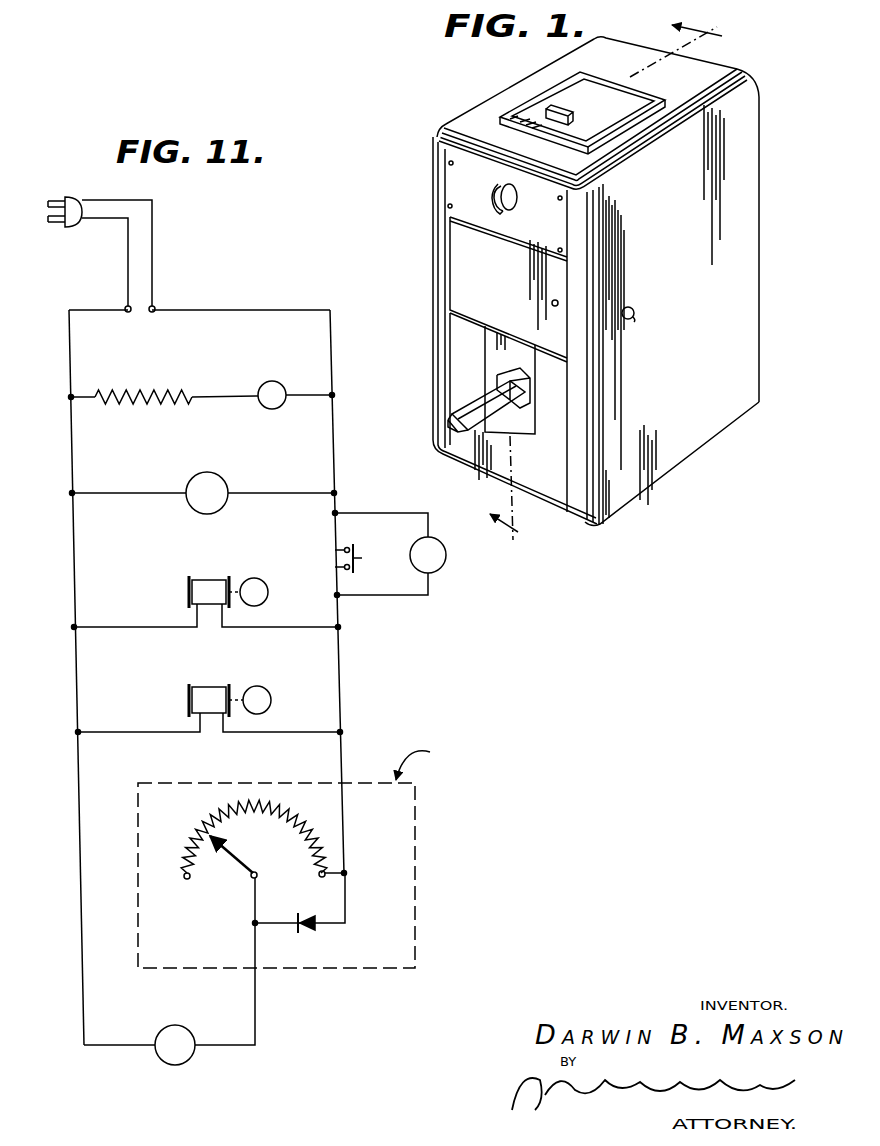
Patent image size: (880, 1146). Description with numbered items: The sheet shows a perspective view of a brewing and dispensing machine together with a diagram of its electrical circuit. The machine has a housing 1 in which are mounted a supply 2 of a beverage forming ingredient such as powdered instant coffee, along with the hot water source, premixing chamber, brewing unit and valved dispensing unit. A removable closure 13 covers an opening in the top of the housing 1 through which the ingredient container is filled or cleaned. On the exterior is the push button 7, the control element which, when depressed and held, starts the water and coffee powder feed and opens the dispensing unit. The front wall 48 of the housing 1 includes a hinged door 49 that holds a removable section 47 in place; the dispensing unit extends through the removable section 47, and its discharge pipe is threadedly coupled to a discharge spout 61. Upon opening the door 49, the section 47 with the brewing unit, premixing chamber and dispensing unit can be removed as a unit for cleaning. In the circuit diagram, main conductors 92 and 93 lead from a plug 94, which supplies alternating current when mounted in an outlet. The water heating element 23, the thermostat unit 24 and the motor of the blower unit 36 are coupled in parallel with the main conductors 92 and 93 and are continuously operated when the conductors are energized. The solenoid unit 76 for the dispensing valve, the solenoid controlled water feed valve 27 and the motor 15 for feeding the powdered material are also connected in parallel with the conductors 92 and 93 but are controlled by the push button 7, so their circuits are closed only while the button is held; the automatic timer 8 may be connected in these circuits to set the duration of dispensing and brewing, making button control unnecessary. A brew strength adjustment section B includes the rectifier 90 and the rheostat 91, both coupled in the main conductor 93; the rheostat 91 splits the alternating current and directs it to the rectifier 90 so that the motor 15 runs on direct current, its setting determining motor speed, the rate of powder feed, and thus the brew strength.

In FIG. 1, the housing 1 is at (764, 186).
In FIG. 1, the supply of beverage forming ingredient 2 is at (614, 283).
In FIG. 1, the push button 7 is at (640, 310).
In FIG. 11, the push button 7 is at (358, 546).
In FIG. 1, the automatic timer 8 is at (492, 200).
In FIG. 11, the automatic timer 8 is at (446, 556).
In FIG. 1, the removable closure 13 is at (552, 100).
In FIG. 1, the removable section 47 is at (487, 364).
In FIG. 1, the front wall 48 is at (448, 325).
In FIG. 1, the hinged door 49 is at (470, 255).
In FIG. 1, the discharge spout 61 is at (470, 406).
In FIG. 11, the motor 15 is at (180, 1023).
In FIG. 11, the water heating element 23 is at (138, 406).
In FIG. 11, the thermostat unit 24 is at (282, 409).
In FIG. 11, the solenoid controlled water feed valve 27 is at (184, 700).
In FIG. 11, the blower unit 36 is at (232, 484).
In FIG. 11, the solenoid unit 76 is at (184, 592).
In FIG. 11, the rectifier 90 is at (312, 916).
In FIG. 11, the rheostat 91 is at (228, 866).
In FIG. 11, the main conductor 92 is at (100, 309).
In FIG. 11, the main conductor 93 is at (187, 309).
In FIG. 11, the plug 94 is at (72, 203).
In FIG. 11, the brew strength adjustment section B is at (420, 873).